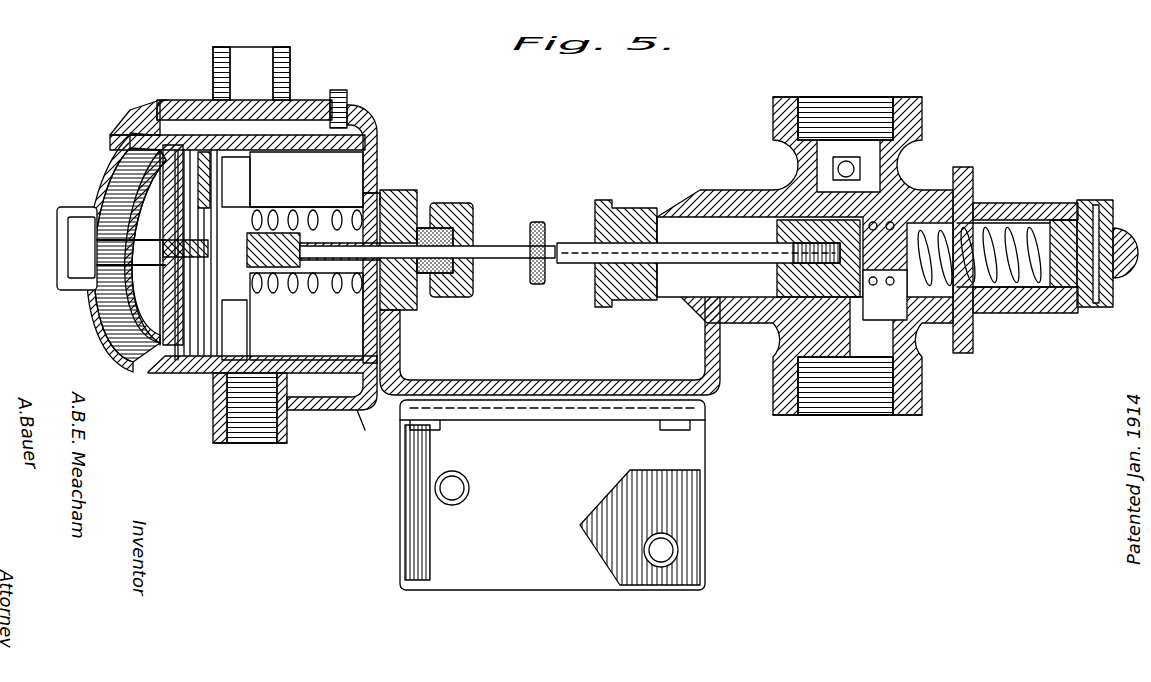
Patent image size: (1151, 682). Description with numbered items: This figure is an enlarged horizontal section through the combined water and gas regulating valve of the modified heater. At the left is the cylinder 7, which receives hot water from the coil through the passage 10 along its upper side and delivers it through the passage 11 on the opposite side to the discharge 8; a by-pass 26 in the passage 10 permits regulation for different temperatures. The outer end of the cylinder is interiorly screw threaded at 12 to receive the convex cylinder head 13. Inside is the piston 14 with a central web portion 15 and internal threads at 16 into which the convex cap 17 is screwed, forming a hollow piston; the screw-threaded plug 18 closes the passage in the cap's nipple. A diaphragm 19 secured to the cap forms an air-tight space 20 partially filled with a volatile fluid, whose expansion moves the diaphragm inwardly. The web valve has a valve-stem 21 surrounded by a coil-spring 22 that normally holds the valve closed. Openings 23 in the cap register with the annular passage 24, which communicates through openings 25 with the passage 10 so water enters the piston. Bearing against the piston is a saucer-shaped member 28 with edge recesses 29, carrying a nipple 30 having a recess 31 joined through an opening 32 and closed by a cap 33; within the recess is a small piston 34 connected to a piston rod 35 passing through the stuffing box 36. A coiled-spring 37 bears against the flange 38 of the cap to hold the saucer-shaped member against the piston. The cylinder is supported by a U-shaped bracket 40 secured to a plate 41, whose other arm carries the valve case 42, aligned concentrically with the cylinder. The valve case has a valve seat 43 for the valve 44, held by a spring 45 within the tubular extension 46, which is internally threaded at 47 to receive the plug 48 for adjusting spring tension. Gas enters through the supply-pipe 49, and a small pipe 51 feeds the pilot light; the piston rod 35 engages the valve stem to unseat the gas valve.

The cylinder 7 is at (166, 456).
The discharge 8 is at (262, 417).
The passage 10 is at (290, 108).
The passage 11 is at (150, 300).
The screw threads 12 is at (170, 340).
The cylinder head 13 is at (90, 240).
The piston 14 is at (282, 95).
The web portion 15 is at (240, 90).
The internal threads 16 is at (225, 355).
The cap 17 is at (128, 330).
The screw-threaded plug 18 is at (57, 222).
The diaphragm 19 is at (115, 180).
The space 20 is at (100, 195).
The valve-stem 21 is at (160, 150).
The coil-spring 22 is at (210, 150).
The openings 23 is at (126, 142).
The annular passage 24 is at (347, 100).
The openings 25 is at (278, 120).
The by-pass 26 is at (377, 147).
The saucer-shaped member 28 is at (240, 210).
The recesses 29 is at (260, 295).
The nipple 30 is at (298, 293).
The recess 31 is at (300, 215).
The opening 32 is at (306, 194).
The cap 33 is at (305, 235).
The piston 34 is at (380, 195).
The piston rod 35 is at (490, 244).
The stuffing box 36 is at (418, 280).
The coiled-spring 37 is at (418, 205).
The flange 38 is at (423, 290).
The U-shaped bracket 40 is at (425, 383).
The plate 41 is at (505, 440).
The valve case 42 is at (935, 340).
The valve seat 43 is at (800, 215).
The valve 44 is at (845, 365).
The spring 45 is at (1035, 270).
The tubular extension 46 is at (1032, 210).
The internal threads 47 is at (590, 243).
The plug 48 is at (650, 300).
The gas supply-pipe 49 is at (538, 220).
The small pipe 51 is at (360, 412).